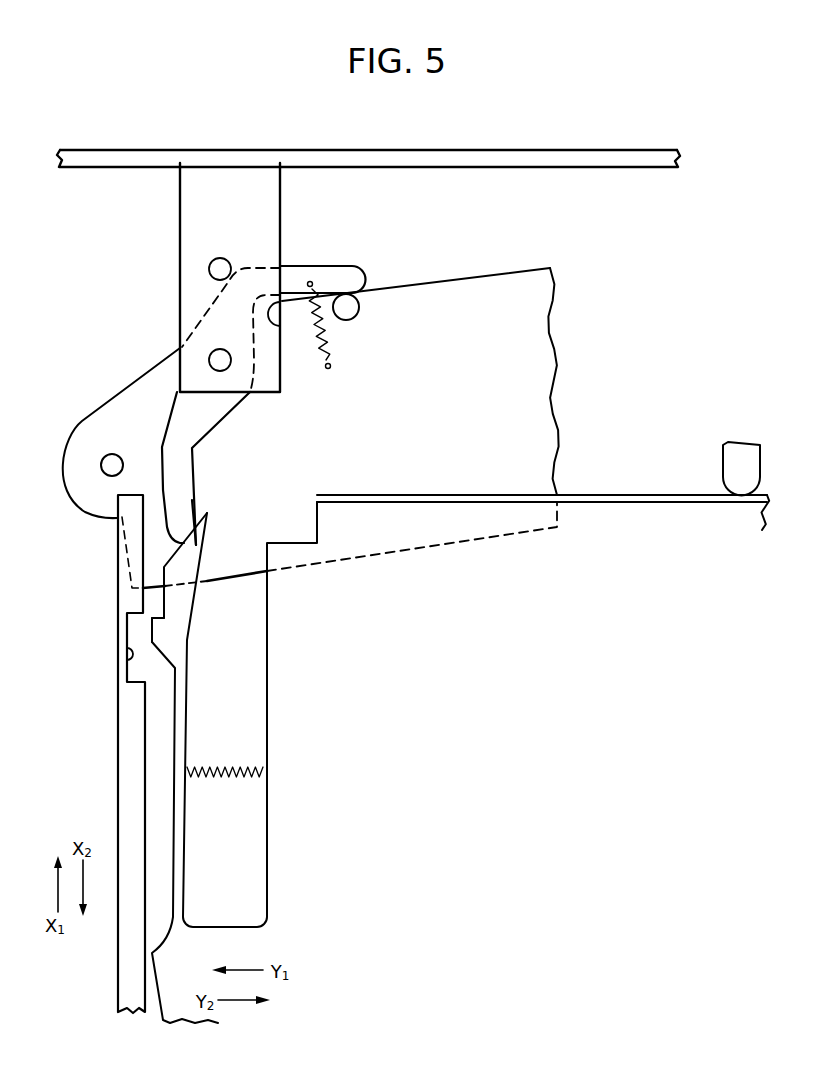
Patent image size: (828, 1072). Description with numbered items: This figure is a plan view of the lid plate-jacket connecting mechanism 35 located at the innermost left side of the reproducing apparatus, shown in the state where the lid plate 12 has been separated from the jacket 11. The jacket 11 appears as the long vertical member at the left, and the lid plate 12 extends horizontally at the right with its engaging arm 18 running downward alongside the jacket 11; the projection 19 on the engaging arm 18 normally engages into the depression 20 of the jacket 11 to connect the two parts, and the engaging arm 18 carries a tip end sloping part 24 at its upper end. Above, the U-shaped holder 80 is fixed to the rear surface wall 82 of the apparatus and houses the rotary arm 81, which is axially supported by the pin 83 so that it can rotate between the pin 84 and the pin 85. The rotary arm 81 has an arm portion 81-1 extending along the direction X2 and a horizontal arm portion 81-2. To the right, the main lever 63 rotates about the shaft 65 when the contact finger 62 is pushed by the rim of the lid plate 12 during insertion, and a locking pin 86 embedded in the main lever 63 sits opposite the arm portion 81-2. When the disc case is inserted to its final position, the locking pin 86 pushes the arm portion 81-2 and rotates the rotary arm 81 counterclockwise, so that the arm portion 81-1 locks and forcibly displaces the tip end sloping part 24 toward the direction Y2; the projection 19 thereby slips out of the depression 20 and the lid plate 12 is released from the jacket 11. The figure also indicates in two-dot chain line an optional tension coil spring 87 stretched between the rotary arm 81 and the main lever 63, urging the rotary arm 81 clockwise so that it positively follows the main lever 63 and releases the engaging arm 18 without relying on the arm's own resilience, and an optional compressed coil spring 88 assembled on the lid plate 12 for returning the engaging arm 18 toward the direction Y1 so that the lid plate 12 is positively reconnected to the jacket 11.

The jacket 11 is at (118, 773).
The lid plate 12 is at (606, 492).
The engaging arm 18 is at (190, 697).
The projection 19 is at (152, 633).
The depression 20 is at (127, 655).
The tip end sloping part 24 is at (198, 548).
The lid plate-jacket connecting mechanism 35 is at (580, 132).
The contact finger 62 is at (723, 458).
The main lever 63 is at (553, 358).
The shaft 65 is at (110, 455).
The U-shaped holder 80 is at (278, 206).
The rotary arm 81 is at (218, 418).
The arm portion 81-1 is at (190, 513).
The arm portion 81-2 is at (352, 263).
The rear surface wall 82 is at (483, 150).
The pin 83 is at (220, 349).
The pin 84 is at (220, 258).
The pin 85 is at (282, 316).
The locking pin 86 is at (360, 308).
The tension coil spring 87 is at (322, 328).
The compressed coil spring 88 is at (234, 763).